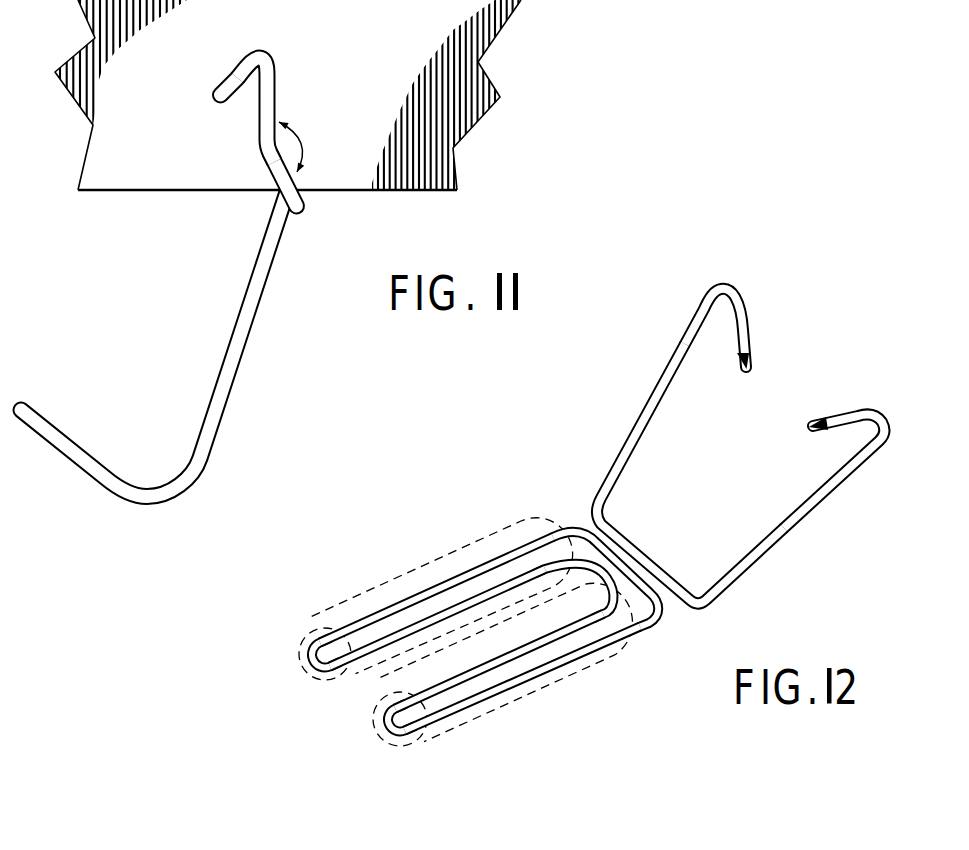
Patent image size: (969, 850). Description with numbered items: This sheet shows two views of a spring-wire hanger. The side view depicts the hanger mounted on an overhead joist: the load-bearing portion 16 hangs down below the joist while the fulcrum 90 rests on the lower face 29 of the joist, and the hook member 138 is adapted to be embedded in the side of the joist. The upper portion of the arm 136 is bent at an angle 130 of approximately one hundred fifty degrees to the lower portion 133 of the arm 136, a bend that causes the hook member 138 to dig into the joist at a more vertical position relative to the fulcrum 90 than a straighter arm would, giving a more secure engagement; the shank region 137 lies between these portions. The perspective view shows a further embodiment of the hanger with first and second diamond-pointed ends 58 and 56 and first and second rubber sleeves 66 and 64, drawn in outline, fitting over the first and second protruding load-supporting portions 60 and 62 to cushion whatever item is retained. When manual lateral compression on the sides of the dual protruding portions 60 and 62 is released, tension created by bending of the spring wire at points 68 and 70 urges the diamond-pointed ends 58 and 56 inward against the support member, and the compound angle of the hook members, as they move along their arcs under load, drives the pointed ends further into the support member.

In FIG. 11, the load-bearing portion 16 is at (58, 437).
In FIG. 11, the lower face of joist 29 is at (137, 192).
In FIG. 11, the fulcrum 90 is at (291, 212).
In FIG. 11, the angle 130 is at (303, 133).
In FIG. 11, the lower portion of arm 133 is at (261, 168).
In FIG. 11, the arm 136 is at (276, 78).
In FIG. 11, the shank portion of pin 137 is at (258, 110).
In FIG. 11, the hook member 138 is at (221, 82).
In FIG. 12, the second diamond-pointed end 56 is at (749, 334).
In FIG. 12, the first diamond-pointed end 58 is at (822, 416).
In FIG. 12, the first protruding load-supporting portion 60 is at (467, 572).
In FIG. 12, the second protruding load-supporting portion 62 is at (560, 666).
In FIG. 12, the second rubber sleeve 64 is at (614, 632).
In FIG. 12, the first rubber sleeve 66 is at (347, 607).
In FIG. 12, the bending point of spring wire 68 is at (388, 722).
In FIG. 12, the bending point of spring wire 70 is at (302, 656).